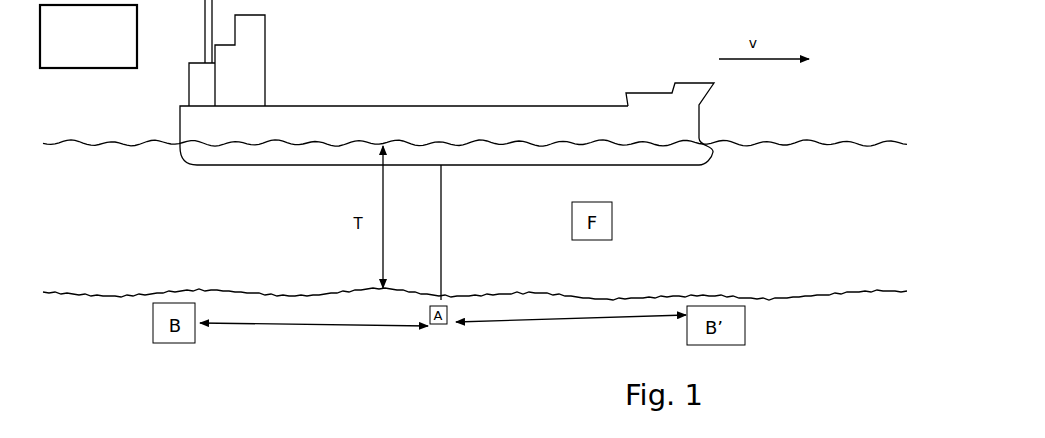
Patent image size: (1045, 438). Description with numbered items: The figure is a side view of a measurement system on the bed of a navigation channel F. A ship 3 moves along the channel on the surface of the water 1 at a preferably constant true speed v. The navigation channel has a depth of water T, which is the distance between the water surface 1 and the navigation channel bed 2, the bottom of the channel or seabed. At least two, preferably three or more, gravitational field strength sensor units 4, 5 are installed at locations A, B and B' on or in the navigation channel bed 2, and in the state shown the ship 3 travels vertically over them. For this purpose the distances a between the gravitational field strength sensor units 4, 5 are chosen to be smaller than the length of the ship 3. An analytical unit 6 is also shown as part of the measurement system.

The surface of the water 1 is at (95, 140).
The navigation channel bed 2 is at (118, 296).
The ship 3 is at (248, 90).
The gravitational field strength sensor unit 4 is at (450, 317).
The gravitational field strength sensor unit 5 is at (687, 317).
The analytical unit 6 is at (88, 36).